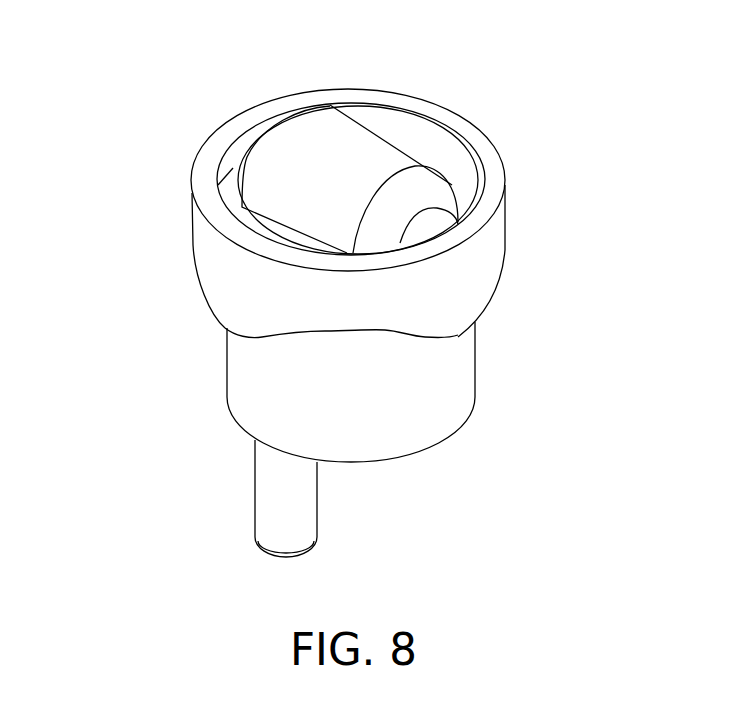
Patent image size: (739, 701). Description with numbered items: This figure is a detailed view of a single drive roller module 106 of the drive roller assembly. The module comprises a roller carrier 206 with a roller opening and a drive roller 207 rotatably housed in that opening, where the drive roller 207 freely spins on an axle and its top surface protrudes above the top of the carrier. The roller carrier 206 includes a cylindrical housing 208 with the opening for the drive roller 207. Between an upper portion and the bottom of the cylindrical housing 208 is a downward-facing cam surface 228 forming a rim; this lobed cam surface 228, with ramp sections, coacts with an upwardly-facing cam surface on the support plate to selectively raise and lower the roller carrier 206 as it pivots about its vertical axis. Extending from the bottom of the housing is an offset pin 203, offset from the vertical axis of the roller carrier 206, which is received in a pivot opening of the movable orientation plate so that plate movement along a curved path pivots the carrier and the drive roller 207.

The drive roller module 106 is at (513, 78).
The roller carrier 206 is at (192, 212).
The drive roller 207 is at (333, 157).
The cylindrical housing 208 is at (227, 367).
The downward-facing cam surface 228 is at (457, 333).
The offset pin 203 is at (253, 486).